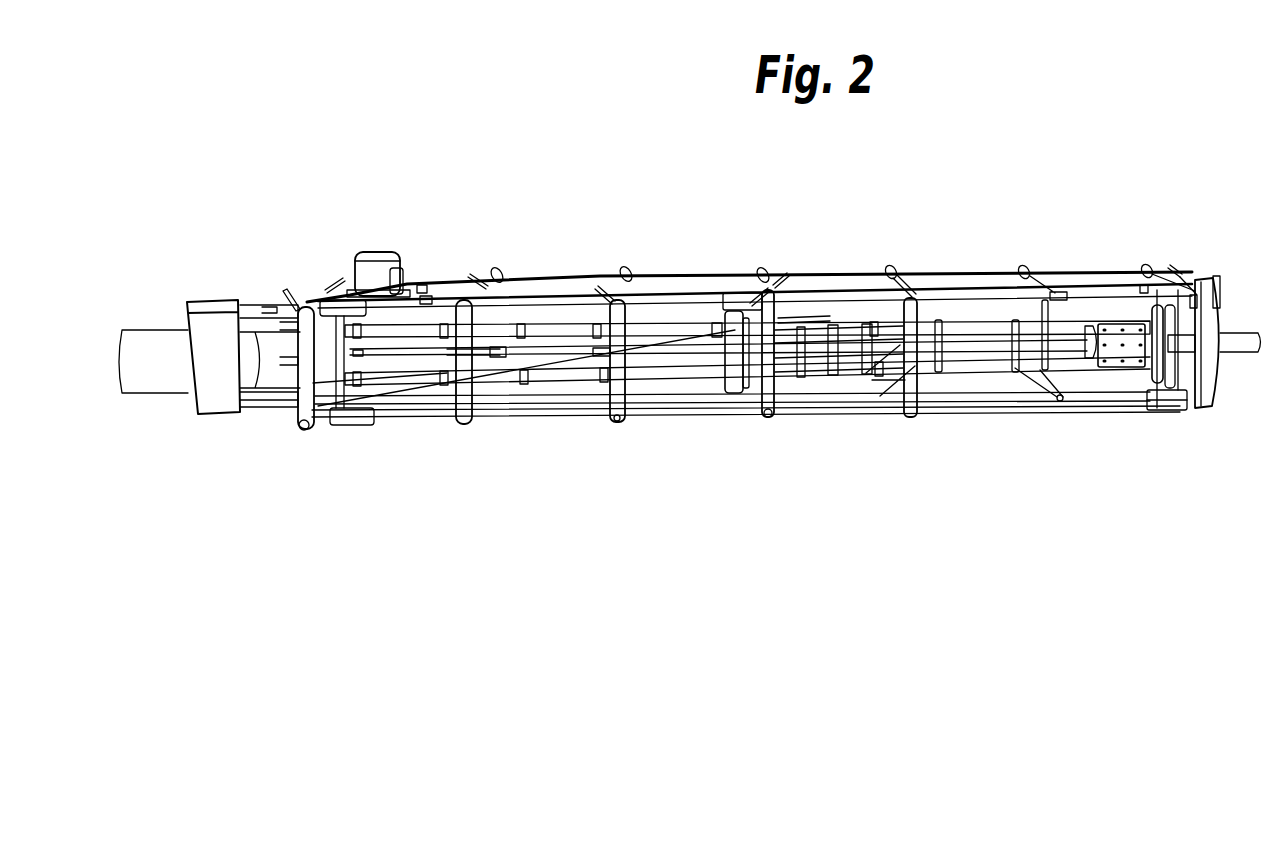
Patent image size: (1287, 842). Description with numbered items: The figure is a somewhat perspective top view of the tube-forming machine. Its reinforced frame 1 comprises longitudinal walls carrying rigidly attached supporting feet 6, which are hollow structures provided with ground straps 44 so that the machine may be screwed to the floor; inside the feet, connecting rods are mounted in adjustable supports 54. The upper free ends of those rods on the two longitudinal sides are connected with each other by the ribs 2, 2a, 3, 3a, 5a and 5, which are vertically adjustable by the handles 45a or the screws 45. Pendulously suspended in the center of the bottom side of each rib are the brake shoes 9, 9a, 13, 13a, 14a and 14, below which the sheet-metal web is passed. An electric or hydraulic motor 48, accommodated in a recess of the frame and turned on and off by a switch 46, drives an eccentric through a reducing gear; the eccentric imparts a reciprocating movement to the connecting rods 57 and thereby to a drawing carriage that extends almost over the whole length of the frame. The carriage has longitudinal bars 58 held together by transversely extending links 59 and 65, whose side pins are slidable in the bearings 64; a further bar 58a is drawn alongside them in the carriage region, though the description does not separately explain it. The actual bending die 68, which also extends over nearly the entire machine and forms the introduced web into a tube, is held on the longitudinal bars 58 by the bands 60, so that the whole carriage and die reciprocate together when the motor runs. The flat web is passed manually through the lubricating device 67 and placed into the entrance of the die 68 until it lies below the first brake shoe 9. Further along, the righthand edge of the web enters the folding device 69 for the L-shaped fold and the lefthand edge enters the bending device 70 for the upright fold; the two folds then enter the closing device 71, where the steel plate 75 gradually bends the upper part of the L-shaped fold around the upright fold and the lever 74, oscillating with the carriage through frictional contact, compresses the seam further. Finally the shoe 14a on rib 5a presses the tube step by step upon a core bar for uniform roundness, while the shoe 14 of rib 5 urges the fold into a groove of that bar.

The reinforced frame 1 is at (1057, 295).
The rib 2 is at (309, 425).
The rib 2a is at (456, 417).
The rib 3 is at (608, 412).
The rib 3a is at (760, 405).
The rib 5 is at (1212, 380).
The rib 5a is at (905, 412).
The supporting feet 6 is at (1160, 290).
The brake shoe 9 is at (343, 412).
The brake shoe 9a is at (497, 358).
The brake shoe 13 is at (617, 293).
The brake shoe 13a is at (787, 292).
The shoe 14 is at (1197, 292).
The shoe 14a is at (882, 377).
The ground straps 44 is at (1145, 268).
The screws 45 is at (766, 410).
The handles 45a is at (285, 290).
The switch 46 is at (425, 290).
The motor 48 is at (362, 254).
The adjustable supports 54 is at (418, 288).
The connecting rods 57 is at (668, 298).
The longitudinal bars 58 is at (980, 330).
The rod 58a is at (832, 322).
The transversely extending link 59 is at (712, 402).
The bands 60 is at (586, 389).
The bearings 64 is at (737, 294).
The transversely extending link 65 is at (1128, 402).
The lubricating device 67 is at (221, 397).
The bending die 68 is at (270, 378).
The folding device 69 is at (790, 412).
The bending device 70 is at (853, 328).
The closing device 71 is at (1100, 368).
The lever 74 is at (1112, 318).
The steel plate 75 is at (1182, 410).